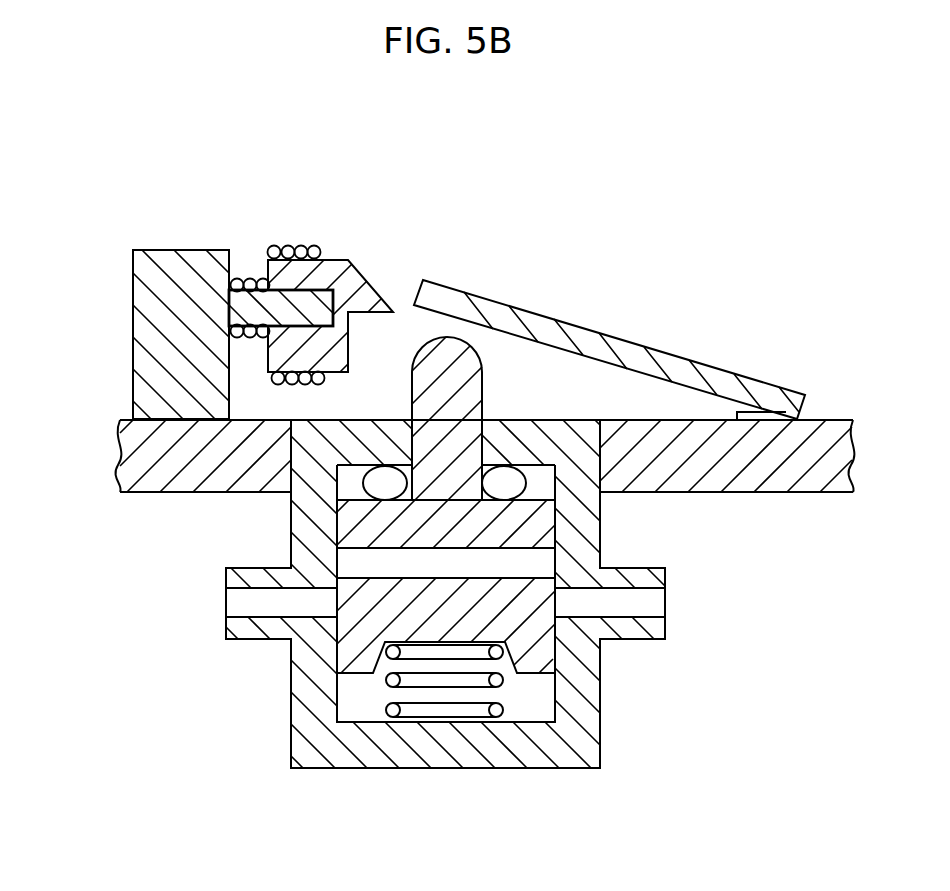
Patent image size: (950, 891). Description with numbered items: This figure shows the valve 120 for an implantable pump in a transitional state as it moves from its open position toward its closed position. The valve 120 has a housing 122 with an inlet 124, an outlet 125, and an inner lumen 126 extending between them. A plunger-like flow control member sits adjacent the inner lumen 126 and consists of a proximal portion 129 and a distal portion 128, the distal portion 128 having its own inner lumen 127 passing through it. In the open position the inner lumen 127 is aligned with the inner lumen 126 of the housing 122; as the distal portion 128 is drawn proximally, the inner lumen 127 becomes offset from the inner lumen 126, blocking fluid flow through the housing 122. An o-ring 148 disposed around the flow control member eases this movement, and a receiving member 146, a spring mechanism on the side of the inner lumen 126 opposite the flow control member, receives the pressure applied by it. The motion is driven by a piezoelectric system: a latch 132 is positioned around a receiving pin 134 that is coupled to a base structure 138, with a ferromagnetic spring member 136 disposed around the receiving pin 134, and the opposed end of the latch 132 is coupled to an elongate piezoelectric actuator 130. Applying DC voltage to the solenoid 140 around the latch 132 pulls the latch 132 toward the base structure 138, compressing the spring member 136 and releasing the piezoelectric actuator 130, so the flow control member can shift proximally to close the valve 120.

The valve 120 is at (145, 128).
The housing 122 is at (130, 467).
The inlet 124 is at (176, 603).
The outlet 125 is at (717, 603).
The inner lumen 126 is at (306, 614).
The inner lumen 127 is at (533, 563).
The distal portion 128 is at (365, 527).
The proximal portion 129 is at (452, 378).
The piezoelectric actuator 130 is at (637, 343).
The latch 132 is at (332, 260).
The receiving pin 134 is at (313, 310).
The spring member 136 is at (247, 278).
The base structure 138 is at (175, 297).
The solenoid 140 is at (285, 245).
The receiving member 146 is at (443, 680).
The o-ring 148 is at (512, 480).